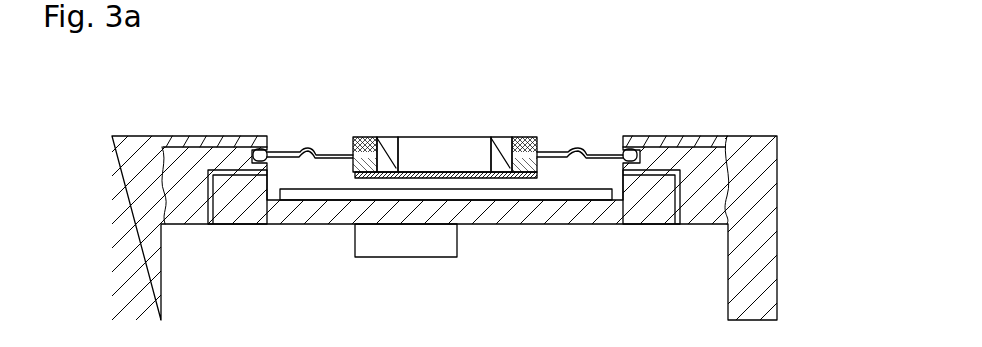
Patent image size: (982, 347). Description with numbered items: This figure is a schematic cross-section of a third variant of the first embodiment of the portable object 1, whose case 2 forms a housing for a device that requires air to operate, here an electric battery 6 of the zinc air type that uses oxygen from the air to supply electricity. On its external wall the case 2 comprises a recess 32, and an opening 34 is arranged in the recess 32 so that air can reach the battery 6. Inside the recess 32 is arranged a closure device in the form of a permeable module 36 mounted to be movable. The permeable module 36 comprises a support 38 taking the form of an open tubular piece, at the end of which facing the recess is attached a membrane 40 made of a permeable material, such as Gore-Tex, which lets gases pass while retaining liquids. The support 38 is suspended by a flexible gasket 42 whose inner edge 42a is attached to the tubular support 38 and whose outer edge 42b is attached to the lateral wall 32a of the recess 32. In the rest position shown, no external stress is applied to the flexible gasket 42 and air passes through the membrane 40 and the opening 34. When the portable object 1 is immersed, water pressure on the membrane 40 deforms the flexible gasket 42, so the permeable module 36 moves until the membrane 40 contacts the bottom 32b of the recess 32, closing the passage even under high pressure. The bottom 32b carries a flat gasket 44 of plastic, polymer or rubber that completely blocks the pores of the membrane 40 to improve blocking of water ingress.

The portable object 1 is at (797, 112).
The case 2 is at (172, 126).
The electric battery 6 is at (400, 250).
The recess 32 is at (297, 152).
The lateral wall 32a is at (605, 165).
The bottom 32b is at (617, 200).
The opening 34 is at (213, 140).
The permeable module 36 is at (548, 112).
The support 38 is at (390, 136).
The membrane 40 is at (480, 178).
The flexible gasket 42 is at (320, 150).
The inner edge 42a is at (523, 137).
The outer edge 42b is at (637, 143).
The flat gasket 44 is at (315, 193).